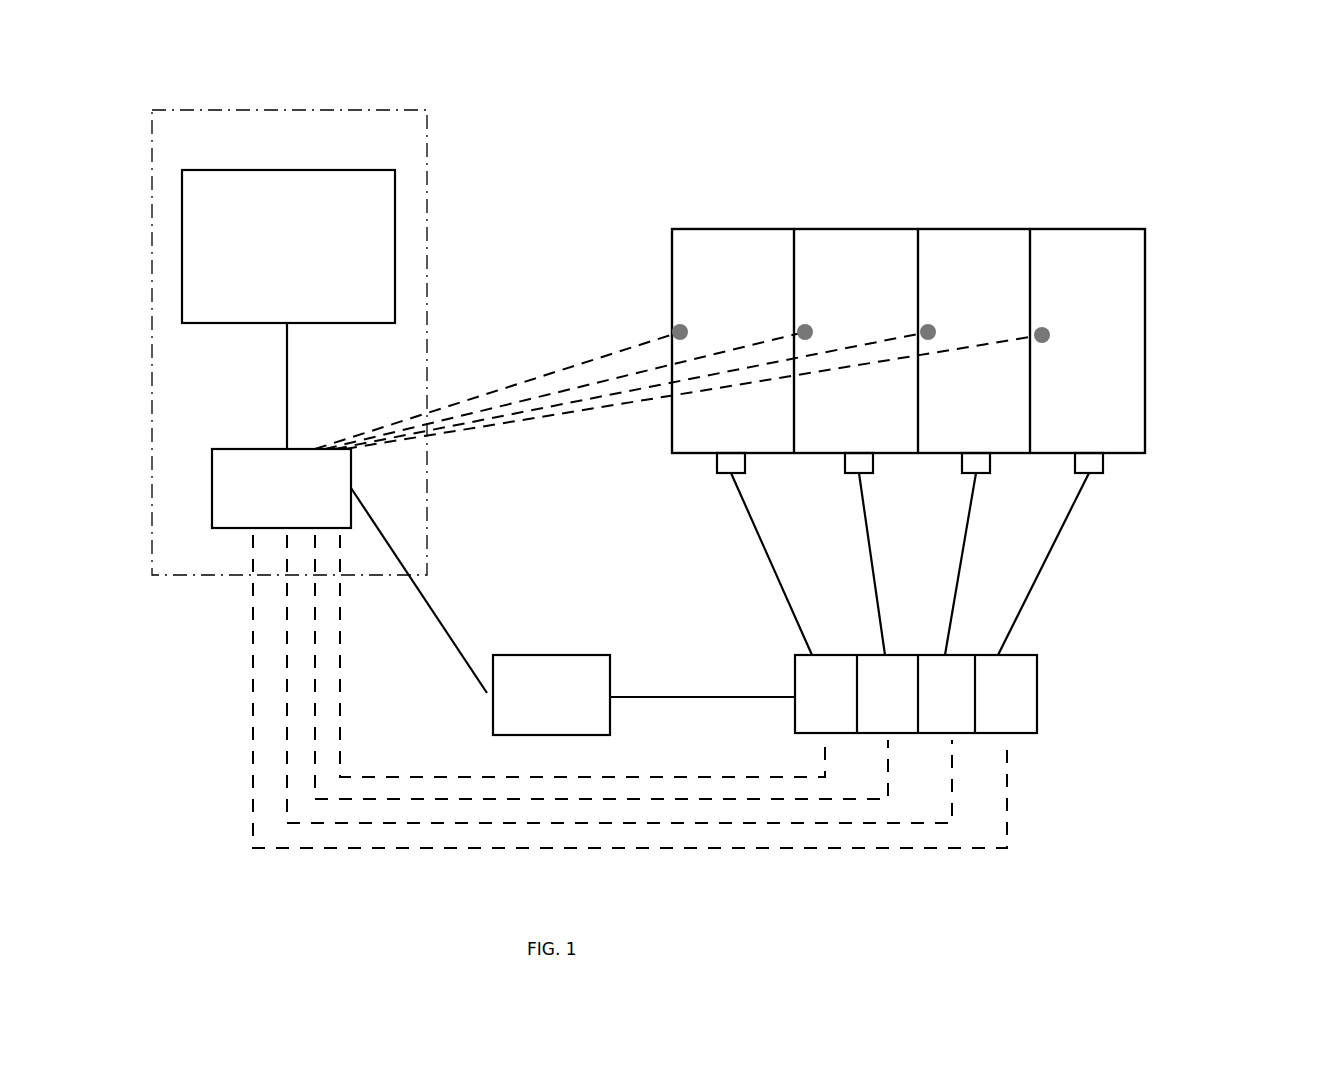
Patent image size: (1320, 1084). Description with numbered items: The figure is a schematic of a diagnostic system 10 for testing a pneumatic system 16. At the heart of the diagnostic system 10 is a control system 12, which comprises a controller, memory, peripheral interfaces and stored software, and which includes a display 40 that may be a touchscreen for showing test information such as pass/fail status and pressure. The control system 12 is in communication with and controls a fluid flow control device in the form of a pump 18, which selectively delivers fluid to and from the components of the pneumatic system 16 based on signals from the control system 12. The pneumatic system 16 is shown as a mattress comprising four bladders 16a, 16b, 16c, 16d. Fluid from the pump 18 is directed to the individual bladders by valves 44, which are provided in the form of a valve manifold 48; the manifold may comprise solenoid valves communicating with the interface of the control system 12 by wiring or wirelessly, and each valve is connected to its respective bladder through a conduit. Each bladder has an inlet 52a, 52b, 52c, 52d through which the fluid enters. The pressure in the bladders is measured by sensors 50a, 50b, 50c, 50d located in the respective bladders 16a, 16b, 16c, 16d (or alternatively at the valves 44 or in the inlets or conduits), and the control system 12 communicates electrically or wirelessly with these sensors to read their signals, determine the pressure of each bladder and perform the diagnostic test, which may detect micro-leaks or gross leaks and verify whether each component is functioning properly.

The diagnostic system 10 is at (718, 160).
The control system 12 is at (212, 528).
The pneumatic system 16 is at (1160, 253).
The bladder 16a is at (717, 245).
The bladder 16b is at (860, 248).
The bladder 16c is at (977, 253).
The bladder 16d is at (1087, 250).
The pump 18 is at (547, 648).
The display 40 is at (290, 167).
The valve 44 is at (827, 655).
The valve manifold 48 is at (1053, 693).
The sensor 50a is at (688, 325).
The sensor 50b is at (812, 325).
The sensor 50c is at (935, 325).
The sensor 50d is at (1050, 328).
The inlet 52a is at (747, 460).
The inlet 52b is at (875, 460).
The inlet 52c is at (992, 460).
The inlet 52d is at (1105, 460).